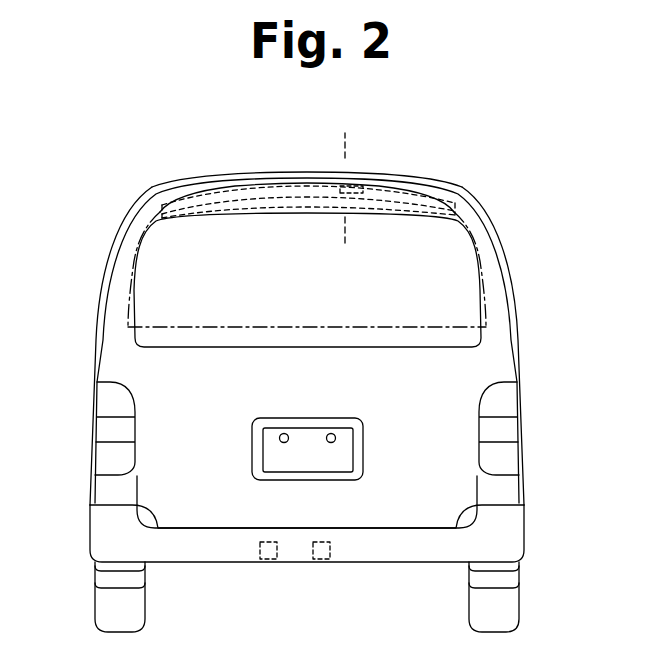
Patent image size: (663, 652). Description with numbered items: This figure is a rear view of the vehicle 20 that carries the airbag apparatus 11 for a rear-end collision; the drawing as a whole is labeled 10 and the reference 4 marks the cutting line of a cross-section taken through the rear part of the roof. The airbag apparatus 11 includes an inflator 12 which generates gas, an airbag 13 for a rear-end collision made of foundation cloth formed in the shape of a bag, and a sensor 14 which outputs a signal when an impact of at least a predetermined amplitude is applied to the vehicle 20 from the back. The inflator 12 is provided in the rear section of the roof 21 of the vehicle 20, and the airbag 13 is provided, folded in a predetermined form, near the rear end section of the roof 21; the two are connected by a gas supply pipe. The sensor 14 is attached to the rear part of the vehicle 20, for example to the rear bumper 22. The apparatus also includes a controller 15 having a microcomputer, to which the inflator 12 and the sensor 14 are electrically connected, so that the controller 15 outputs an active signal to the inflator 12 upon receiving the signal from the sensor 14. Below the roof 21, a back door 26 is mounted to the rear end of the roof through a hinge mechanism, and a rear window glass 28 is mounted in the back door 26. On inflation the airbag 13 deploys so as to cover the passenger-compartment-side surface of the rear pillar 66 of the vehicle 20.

The vehicle 10 is at (309, 377).
The airbag apparatus for a rear-end collision 11 is at (518, 226).
The vehicle 20 is at (355, 325).
The roof 21 is at (229, 178).
The section line of FIG. 4 is at (345, 133).
The inflator 12 is at (367, 176).
The airbag for a rear-end collision 13 is at (438, 205).
The rear window glass 28 is at (462, 271).
The back door 26 is at (497, 362).
The rear pillar 66 is at (113, 258).
The rear bumper 22 is at (192, 563).
The controller 15 is at (265, 565).
The sensor 14 is at (317, 565).